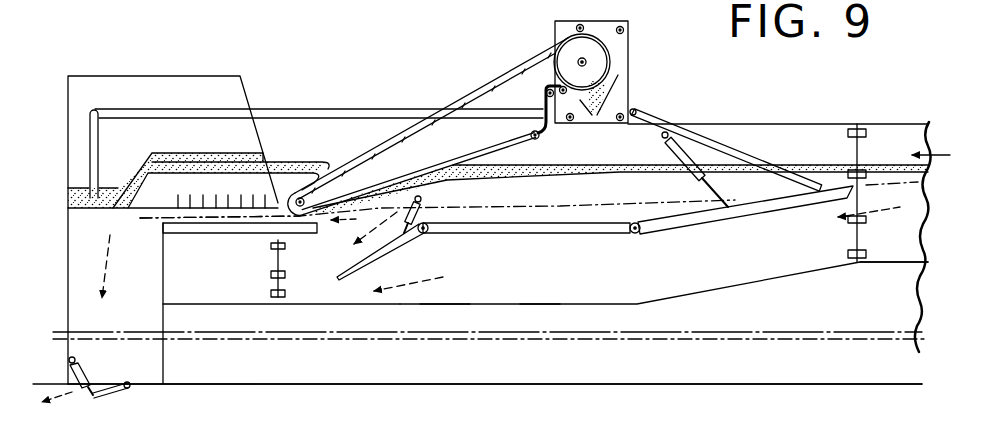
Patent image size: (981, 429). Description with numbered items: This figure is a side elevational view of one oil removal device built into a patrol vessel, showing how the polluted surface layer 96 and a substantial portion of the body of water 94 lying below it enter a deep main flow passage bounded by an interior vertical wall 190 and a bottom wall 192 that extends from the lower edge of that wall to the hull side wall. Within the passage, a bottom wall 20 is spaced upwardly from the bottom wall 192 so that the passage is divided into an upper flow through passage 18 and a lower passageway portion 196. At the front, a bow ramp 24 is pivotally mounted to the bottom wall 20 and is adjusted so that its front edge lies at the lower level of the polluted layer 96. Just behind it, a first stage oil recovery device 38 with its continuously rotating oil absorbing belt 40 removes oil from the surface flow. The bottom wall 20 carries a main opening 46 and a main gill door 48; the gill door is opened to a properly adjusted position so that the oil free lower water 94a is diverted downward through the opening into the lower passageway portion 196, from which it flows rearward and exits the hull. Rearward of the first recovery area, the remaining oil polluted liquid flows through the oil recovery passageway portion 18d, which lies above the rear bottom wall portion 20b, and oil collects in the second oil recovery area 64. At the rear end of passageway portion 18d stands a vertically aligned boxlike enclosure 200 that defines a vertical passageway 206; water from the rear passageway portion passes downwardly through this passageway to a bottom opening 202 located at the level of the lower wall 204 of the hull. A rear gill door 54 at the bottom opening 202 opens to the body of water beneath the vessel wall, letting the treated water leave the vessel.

The boxlike enclosure 200 is at (67, 267).
The oil recovery passageway portion 18d is at (177, 212).
The second oil recovery area 64 is at (197, 182).
The first stage oil recovery device 38 is at (449, 90).
The oil absorbing belt 40 is at (508, 69).
The upper flow through passage 18 is at (616, 186).
The polluted surface layer 96 is at (878, 167).
The rear bottom wall portion 20b is at (240, 244).
The main opening 46 is at (342, 240).
The vertical passageway 206 is at (140, 284).
The main gill door 48 is at (381, 256).
The lower level of water 94a is at (482, 216).
The bottom wall 20 is at (610, 236).
The bow ramp 24 is at (697, 218).
The interior vertical wall 190 is at (570, 281).
The lower passageway portion 196 is at (470, 277).
The bottom wall 192 is at (540, 306).
The body of water 94 is at (887, 243).
The bottom opening 202 is at (108, 380).
The lower wall 204 is at (228, 387).
The rear gill door 54 is at (90, 392).